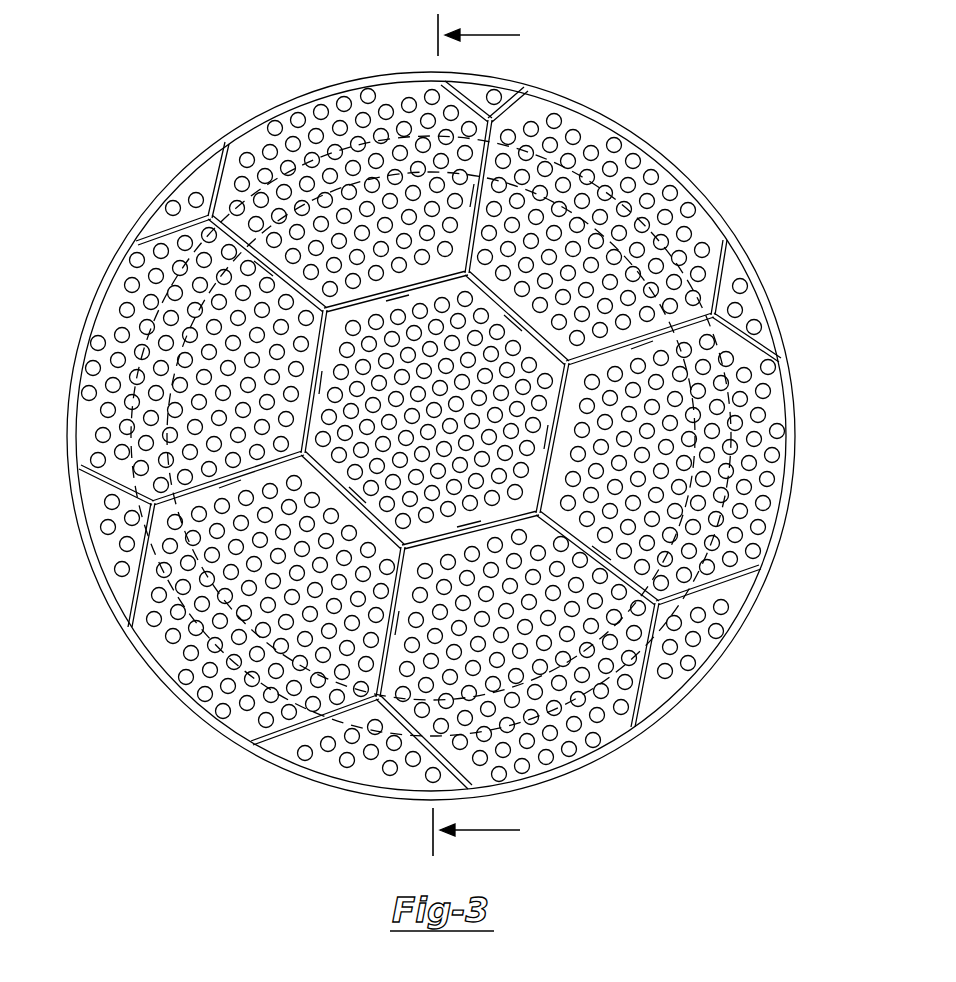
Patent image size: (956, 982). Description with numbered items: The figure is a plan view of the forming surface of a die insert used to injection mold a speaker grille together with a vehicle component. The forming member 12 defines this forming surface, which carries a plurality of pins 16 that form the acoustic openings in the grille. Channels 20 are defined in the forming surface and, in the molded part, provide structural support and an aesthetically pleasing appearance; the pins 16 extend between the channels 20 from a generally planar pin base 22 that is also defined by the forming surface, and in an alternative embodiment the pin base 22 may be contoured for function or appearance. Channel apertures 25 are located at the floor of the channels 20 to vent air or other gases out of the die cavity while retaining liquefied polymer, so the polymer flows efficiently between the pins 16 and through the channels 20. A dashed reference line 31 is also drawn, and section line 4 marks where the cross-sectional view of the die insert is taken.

The forming member 12 is at (688, 168).
The pins 16 is at (298, 120).
The channels 20 is at (145, 243).
The pin base 22 is at (772, 450).
The channel apertures 25 is at (491, 133).
The dashed reference line 31 is at (668, 696).
The section line 4- 4 is at (495, 435).